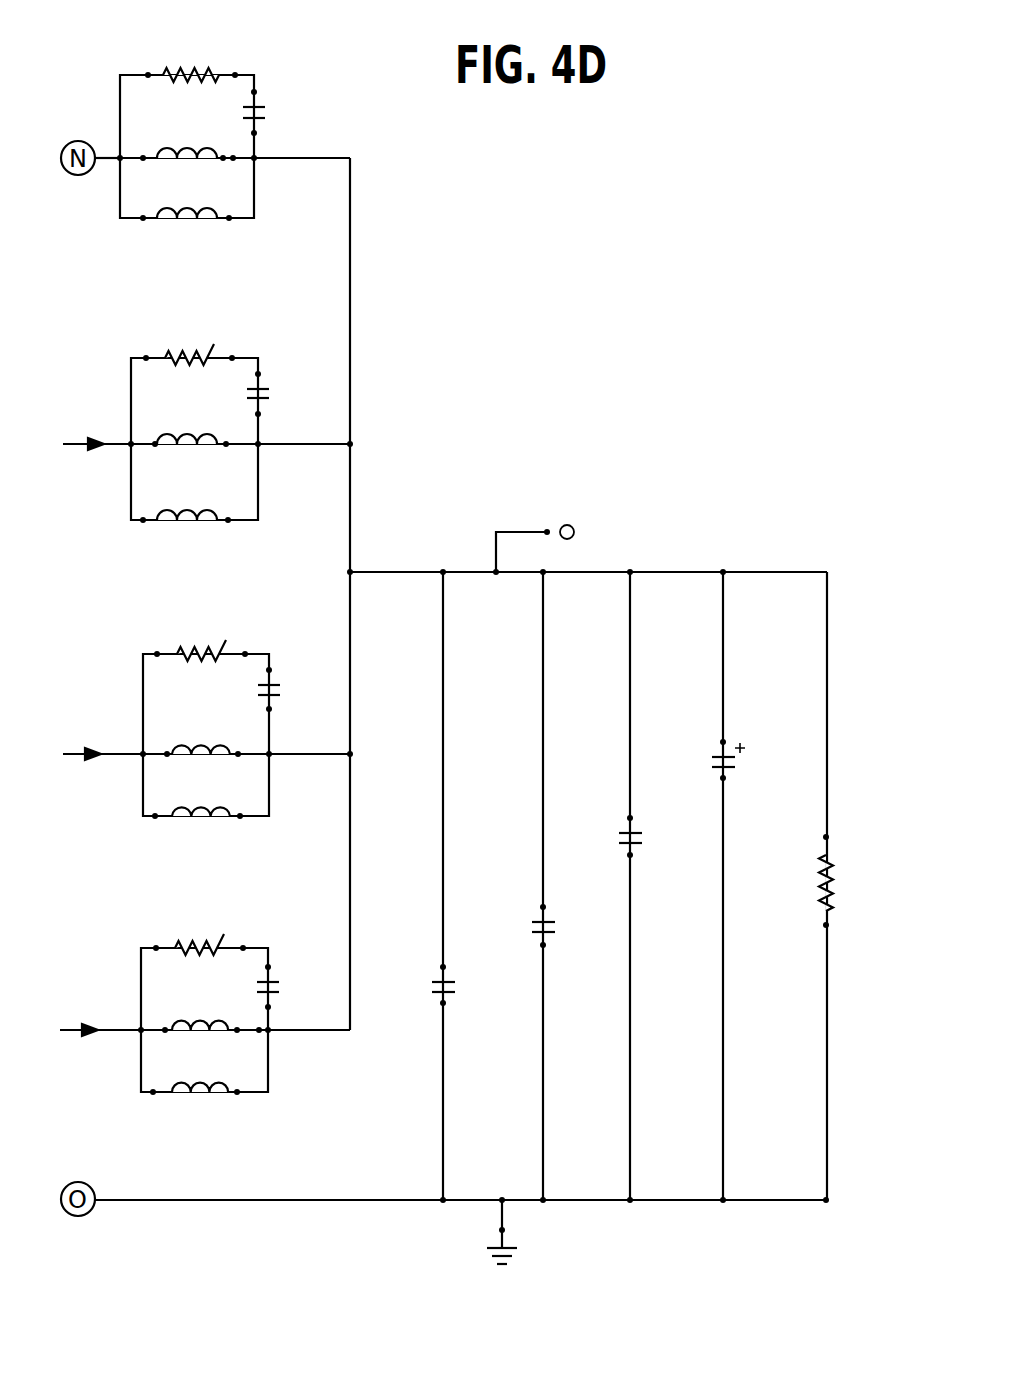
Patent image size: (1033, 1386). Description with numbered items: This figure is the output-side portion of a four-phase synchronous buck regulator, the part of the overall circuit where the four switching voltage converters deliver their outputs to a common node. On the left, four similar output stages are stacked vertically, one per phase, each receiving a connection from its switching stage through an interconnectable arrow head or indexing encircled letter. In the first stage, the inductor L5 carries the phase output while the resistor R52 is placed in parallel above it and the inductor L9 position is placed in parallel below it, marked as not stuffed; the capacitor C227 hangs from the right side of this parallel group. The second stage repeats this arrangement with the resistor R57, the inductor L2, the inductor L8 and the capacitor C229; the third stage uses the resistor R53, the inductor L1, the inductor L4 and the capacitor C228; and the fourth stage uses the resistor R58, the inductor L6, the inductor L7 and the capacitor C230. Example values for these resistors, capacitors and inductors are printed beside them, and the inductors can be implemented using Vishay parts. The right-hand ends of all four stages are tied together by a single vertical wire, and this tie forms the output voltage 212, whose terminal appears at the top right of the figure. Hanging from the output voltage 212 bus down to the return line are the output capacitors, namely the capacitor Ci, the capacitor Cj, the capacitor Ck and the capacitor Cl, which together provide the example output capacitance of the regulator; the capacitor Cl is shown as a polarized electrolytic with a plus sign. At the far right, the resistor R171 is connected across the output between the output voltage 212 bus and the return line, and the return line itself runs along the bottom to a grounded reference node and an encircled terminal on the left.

The output voltage 212 is at (574, 532).
The resistor R52 is at (191, 48).
The resistor R57 is at (189, 331).
The resistor R53 is at (201, 628).
The resistor R58 is at (199, 921).
The inductor L5 is at (188, 124).
The inductor L9 is at (186, 212).
The inductor L2 is at (190, 408).
The inductor L8 is at (185, 511).
The inductor L1 is at (202, 720).
The inductor L4 is at (197, 809).
The inductor L6 is at (212, 996).
The inductor L7 is at (195, 1086).
The capacitor C227 is at (285, 113).
The capacitor C229 is at (290, 395).
The capacitor C228 is at (302, 691).
The capacitor C230 is at (301, 985).
The capacitor Ci is at (472, 974).
The capacitor Cj is at (575, 914).
The capacitor Ck is at (664, 843).
The capacitor Cl is at (760, 774).
The resistor R171 is at (868, 861).